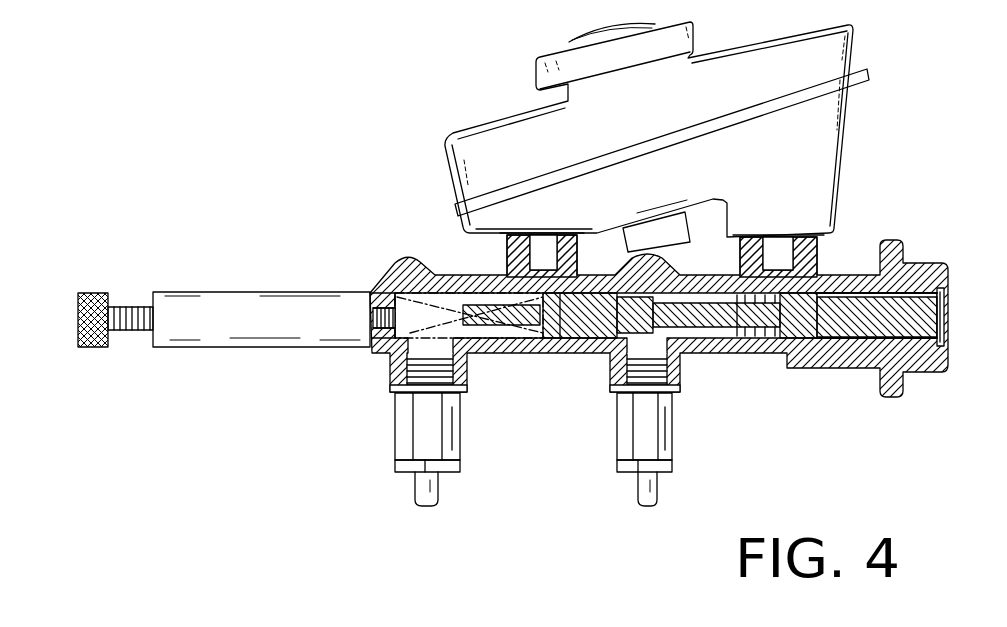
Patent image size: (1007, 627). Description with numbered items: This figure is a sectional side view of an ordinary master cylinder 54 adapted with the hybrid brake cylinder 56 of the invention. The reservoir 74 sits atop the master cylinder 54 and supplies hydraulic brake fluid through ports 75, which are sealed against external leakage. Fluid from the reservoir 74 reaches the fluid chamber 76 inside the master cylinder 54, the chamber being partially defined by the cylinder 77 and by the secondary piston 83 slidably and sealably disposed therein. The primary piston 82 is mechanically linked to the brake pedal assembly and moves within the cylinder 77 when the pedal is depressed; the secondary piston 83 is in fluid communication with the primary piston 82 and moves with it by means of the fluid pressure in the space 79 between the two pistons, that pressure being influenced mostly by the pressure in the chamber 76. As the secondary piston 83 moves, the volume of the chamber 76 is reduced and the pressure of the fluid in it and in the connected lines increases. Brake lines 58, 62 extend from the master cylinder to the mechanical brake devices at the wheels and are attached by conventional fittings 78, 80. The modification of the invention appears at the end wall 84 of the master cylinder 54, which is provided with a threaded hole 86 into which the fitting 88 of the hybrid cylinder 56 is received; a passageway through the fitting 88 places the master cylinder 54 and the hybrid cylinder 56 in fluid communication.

The master cylinder 54 is at (380, 197).
The hybrid brake cylinder 56 is at (193, 270).
The brake line 58 is at (437, 487).
The brake line 62 is at (657, 488).
The reservoir 74 is at (460, 150).
The ports 75 is at (540, 277).
The fluid chamber 76 is at (410, 332).
The cylinder 77 is at (692, 290).
The fitting 78 is at (458, 425).
The space 79 is at (710, 336).
The fitting 80 is at (667, 433).
The primary piston 82 is at (855, 327).
The secondary piston 83 is at (585, 320).
The end wall 84 is at (370, 333).
The threaded hole 86 is at (373, 310).
The fitting 88 is at (373, 317).